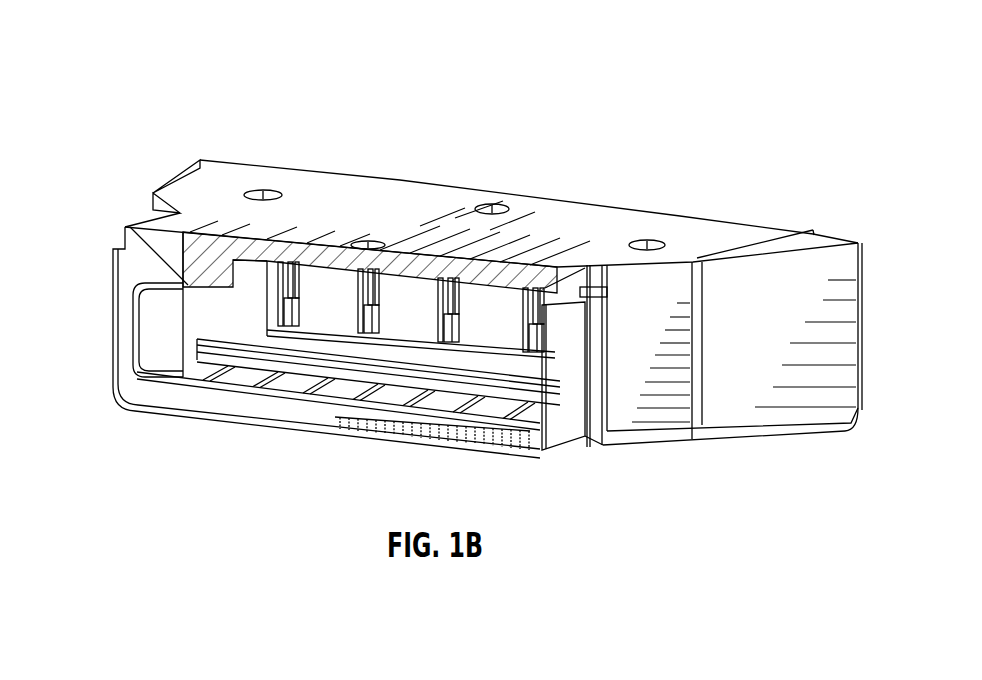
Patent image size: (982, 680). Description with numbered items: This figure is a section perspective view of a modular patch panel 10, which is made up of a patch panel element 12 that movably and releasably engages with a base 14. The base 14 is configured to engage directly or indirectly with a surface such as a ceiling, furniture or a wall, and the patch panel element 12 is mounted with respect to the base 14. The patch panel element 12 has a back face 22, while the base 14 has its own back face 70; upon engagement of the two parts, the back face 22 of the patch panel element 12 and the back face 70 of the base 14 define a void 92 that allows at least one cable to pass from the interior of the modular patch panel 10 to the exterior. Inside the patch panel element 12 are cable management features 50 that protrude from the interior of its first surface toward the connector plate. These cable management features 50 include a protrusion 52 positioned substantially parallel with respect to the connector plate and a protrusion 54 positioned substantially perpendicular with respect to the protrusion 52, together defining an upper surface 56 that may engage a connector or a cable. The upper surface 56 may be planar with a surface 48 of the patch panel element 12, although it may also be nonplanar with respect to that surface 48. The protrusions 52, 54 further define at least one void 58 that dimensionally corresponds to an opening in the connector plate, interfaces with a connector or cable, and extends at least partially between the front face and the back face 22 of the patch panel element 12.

The modular patch panel 10 is at (117, 59).
The patch panel element 12 is at (551, 430).
The base 14 is at (599, 227).
The back face 22 is at (484, 432).
The surface 48 is at (310, 325).
The cable management features 50 is at (202, 336).
The protrusion 52 is at (297, 380).
The protrusion 54 is at (243, 397).
The upper surface 56 is at (362, 388).
The void 58 is at (430, 400).
The back face 70 is at (147, 265).
The void 92 is at (140, 362).